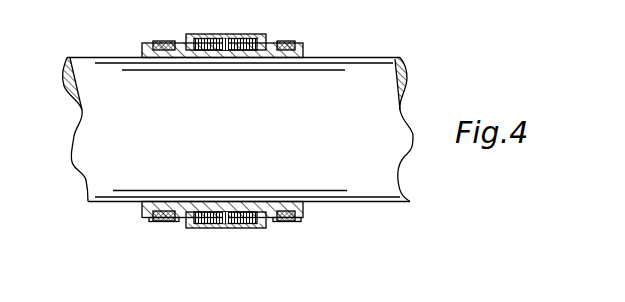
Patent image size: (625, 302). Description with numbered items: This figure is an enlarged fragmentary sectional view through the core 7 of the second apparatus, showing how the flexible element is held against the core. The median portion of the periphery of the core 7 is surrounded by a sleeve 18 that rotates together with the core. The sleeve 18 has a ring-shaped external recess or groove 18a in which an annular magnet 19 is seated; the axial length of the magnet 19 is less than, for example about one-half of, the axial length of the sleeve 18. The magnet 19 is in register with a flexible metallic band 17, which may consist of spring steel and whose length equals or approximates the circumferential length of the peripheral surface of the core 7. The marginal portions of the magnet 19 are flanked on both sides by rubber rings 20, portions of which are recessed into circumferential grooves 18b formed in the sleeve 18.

The core 7 is at (360, 70).
The metallic band 17 is at (225, 229).
The sleeve 18 is at (302, 50).
The external recess or groove 18a is at (232, 210).
The circumferential grooves 18b is at (163, 50).
The annular magnet 19 is at (228, 40).
The rubber rings 20 is at (161, 224).